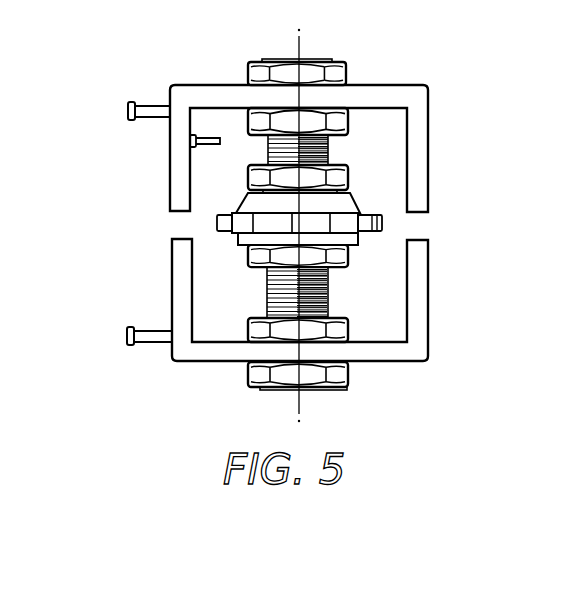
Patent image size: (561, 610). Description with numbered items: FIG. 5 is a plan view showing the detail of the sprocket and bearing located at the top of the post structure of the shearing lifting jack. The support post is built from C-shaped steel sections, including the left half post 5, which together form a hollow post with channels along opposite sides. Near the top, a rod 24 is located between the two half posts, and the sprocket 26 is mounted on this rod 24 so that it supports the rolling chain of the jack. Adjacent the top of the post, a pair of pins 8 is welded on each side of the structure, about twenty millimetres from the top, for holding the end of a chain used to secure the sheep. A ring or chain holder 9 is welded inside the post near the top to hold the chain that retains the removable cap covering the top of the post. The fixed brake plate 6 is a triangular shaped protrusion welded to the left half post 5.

The left half post 5 is at (385, 97).
The fixed brake plate 6 is at (398, 353).
The pins 8 is at (128, 112).
The ring or chain holder 9 is at (210, 138).
The rod 24 is at (328, 150).
The sprocket 26 is at (383, 225).